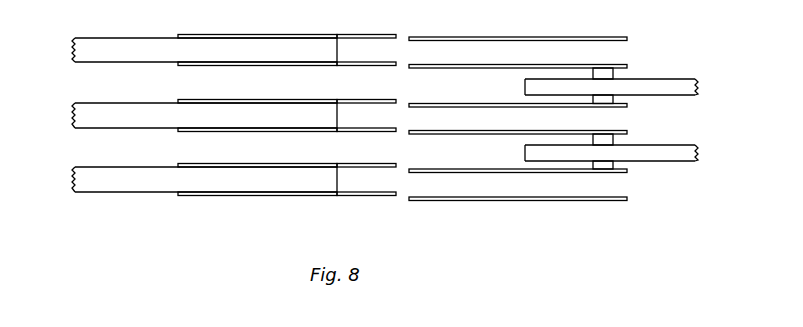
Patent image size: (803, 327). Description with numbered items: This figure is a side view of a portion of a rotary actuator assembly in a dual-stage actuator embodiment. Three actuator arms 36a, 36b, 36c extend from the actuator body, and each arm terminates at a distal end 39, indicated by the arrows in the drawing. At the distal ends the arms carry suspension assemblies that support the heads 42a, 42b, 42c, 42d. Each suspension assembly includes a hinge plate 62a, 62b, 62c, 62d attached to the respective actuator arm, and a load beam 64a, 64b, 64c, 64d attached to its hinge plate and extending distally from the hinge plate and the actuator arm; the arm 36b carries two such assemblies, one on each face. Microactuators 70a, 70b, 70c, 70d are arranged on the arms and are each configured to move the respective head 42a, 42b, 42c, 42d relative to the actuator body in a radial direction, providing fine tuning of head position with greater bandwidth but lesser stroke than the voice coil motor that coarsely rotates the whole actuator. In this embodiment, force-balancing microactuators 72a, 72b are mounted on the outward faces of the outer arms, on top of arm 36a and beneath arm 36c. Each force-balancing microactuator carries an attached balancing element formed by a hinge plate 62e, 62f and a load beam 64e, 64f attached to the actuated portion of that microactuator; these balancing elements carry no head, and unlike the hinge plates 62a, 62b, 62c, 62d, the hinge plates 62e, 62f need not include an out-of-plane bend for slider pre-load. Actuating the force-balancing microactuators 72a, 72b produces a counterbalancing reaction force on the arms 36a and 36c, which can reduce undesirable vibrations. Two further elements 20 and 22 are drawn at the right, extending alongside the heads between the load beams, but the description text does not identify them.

The actuator arm 36a is at (128, 36).
The actuator arm 36b is at (128, 102).
The actuator arm 36c is at (128, 167).
The force-balancing microactuator 72a is at (306, 34).
The force-balancing microactuator 72b is at (222, 196).
The microactuator 70a is at (222, 66).
The microactuator 70b is at (298, 100).
The microactuator 70c is at (222, 132).
The microactuator 70d is at (298, 164).
The hinge plate 62a is at (402, 66).
The hinge plate 62b is at (372, 100).
The hinge plate 62c is at (402, 132).
The hinge plate 62d is at (372, 164).
The hinge plate 62e is at (400, 34).
The hinge plate 62f is at (403, 200).
The load beam 64a is at (483, 68).
The load beam 64b is at (455, 103).
The load beam 64c is at (483, 134).
The load beam 64d is at (455, 168).
The load beam 64e is at (479, 37).
The load beam 64f is at (551, 201).
The head 42a is at (613, 73).
The head 42b is at (613, 98).
The head 42c is at (613, 139).
The head 42d is at (613, 166).
The first bus bar 20 is at (684, 80).
The second bus bar 22 is at (683, 146).
The distal end 39 is at (356, 51).